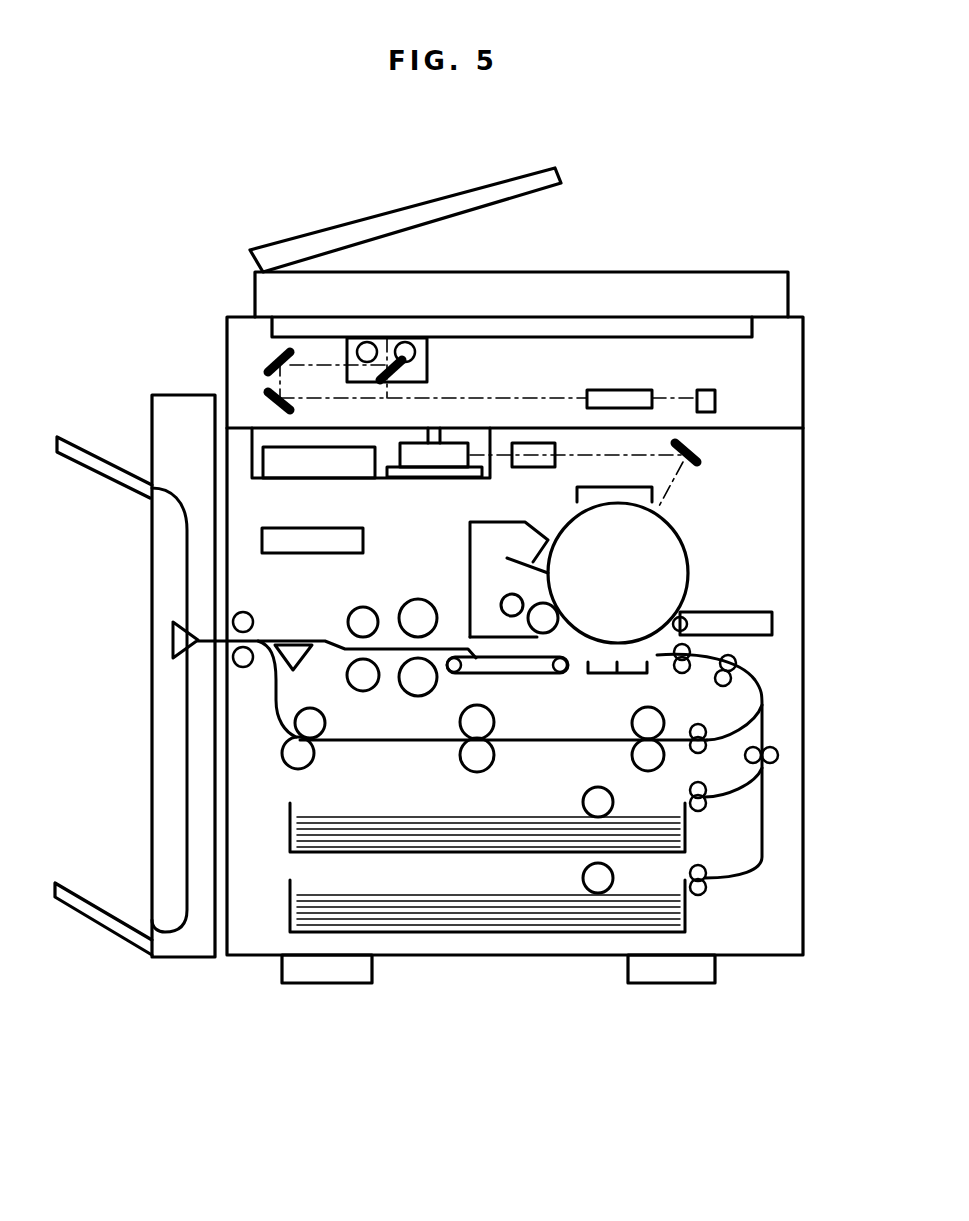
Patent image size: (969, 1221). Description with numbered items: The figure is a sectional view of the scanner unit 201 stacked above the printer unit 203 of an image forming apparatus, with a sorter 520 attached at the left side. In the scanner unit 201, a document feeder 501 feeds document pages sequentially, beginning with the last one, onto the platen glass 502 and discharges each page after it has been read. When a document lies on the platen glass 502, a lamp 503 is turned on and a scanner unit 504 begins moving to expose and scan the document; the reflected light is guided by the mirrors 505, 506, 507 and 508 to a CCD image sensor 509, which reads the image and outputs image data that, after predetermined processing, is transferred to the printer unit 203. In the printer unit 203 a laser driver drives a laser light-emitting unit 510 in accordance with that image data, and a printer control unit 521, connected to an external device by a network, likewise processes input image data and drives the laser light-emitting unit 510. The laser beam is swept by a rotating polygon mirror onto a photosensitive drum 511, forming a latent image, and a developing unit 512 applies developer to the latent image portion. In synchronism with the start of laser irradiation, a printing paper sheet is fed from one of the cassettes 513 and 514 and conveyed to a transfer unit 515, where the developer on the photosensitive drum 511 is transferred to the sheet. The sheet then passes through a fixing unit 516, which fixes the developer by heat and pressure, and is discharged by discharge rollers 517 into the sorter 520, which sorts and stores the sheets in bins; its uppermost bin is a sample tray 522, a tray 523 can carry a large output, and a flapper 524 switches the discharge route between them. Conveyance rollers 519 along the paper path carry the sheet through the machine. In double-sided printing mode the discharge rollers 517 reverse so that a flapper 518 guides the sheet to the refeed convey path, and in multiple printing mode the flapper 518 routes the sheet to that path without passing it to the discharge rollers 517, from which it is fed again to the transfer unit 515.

The scanner unit 201 is at (813, 170).
The printer unit 203 is at (813, 985).
The document feeder 501 is at (346, 218).
The platen glass 502 is at (626, 312).
The lamp 503 is at (410, 343).
The scanner unit 504 is at (446, 363).
The mirror 505 is at (393, 377).
The mirror 506 is at (270, 361).
The mirror 507 is at (270, 400).
The mirror 508 is at (620, 390).
The CCD image sensor 509 is at (708, 390).
The laser light-emitting unit 510 is at (318, 465).
The photosensitive drum 511 is at (668, 523).
The developing unit 512 is at (732, 622).
The cassette 513 is at (525, 830).
The cassette 514 is at (690, 915).
The transfer unit 515 is at (595, 680).
The fixing unit 516 is at (403, 675).
The discharge rollers 517 is at (243, 658).
The flapper 518 is at (305, 660).
The conveyance rollers 519 is at (470, 745).
The sorter 520 is at (183, 972).
The printer control unit 521 is at (366, 540).
The sample tray 522 is at (110, 455).
The tray 523 is at (103, 915).
The flapper 524 is at (170, 641).